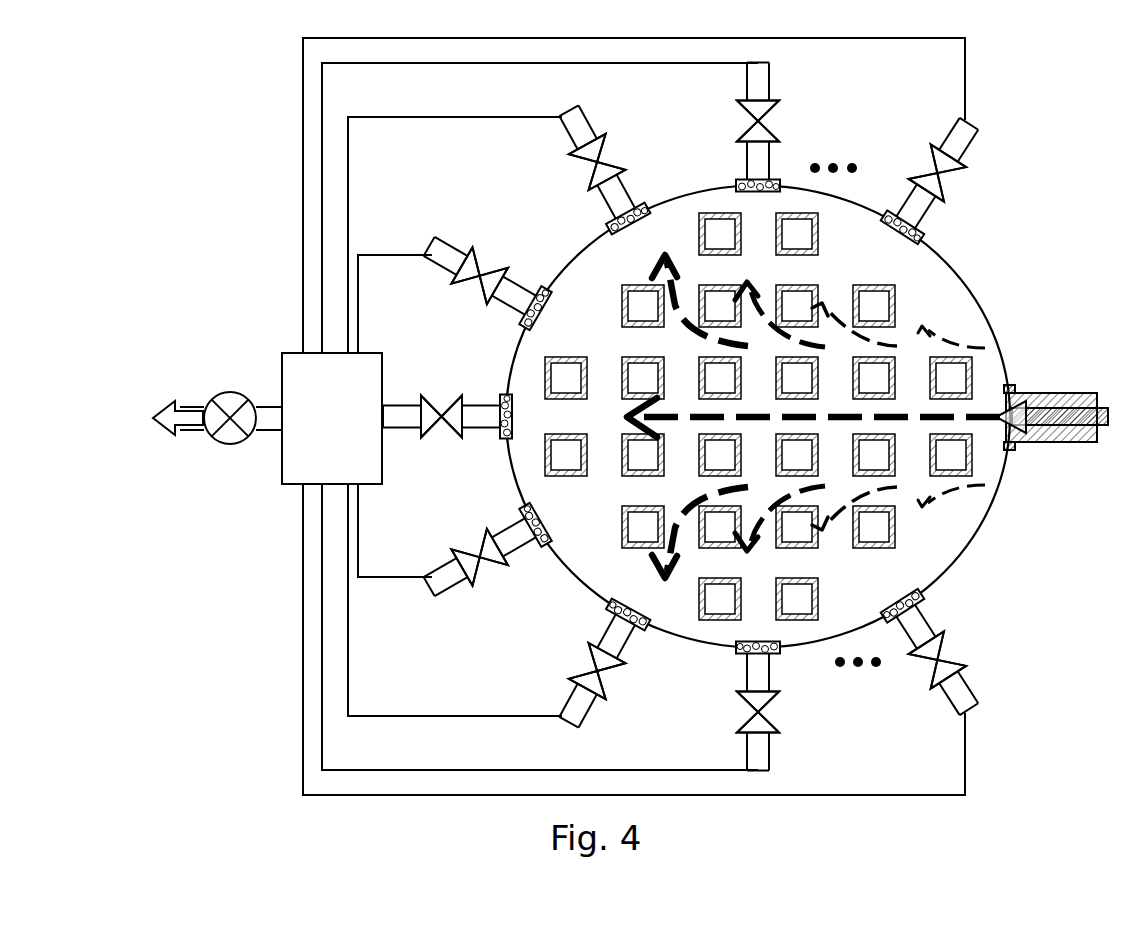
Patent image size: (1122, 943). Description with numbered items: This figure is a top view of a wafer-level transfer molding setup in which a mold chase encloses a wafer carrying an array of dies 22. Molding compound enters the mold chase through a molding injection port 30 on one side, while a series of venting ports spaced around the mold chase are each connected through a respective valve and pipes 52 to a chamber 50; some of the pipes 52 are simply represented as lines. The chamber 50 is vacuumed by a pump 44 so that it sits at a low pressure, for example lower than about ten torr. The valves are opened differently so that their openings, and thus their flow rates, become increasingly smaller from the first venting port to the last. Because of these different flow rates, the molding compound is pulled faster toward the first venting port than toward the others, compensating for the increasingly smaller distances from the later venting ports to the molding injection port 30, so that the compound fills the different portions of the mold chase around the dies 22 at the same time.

The dies 22 is at (807, 608).
The molding injection port 30 is at (1012, 387).
The pump 44 is at (218, 446).
The chamber 50 is at (341, 432).
The pipes 52 is at (931, 110).